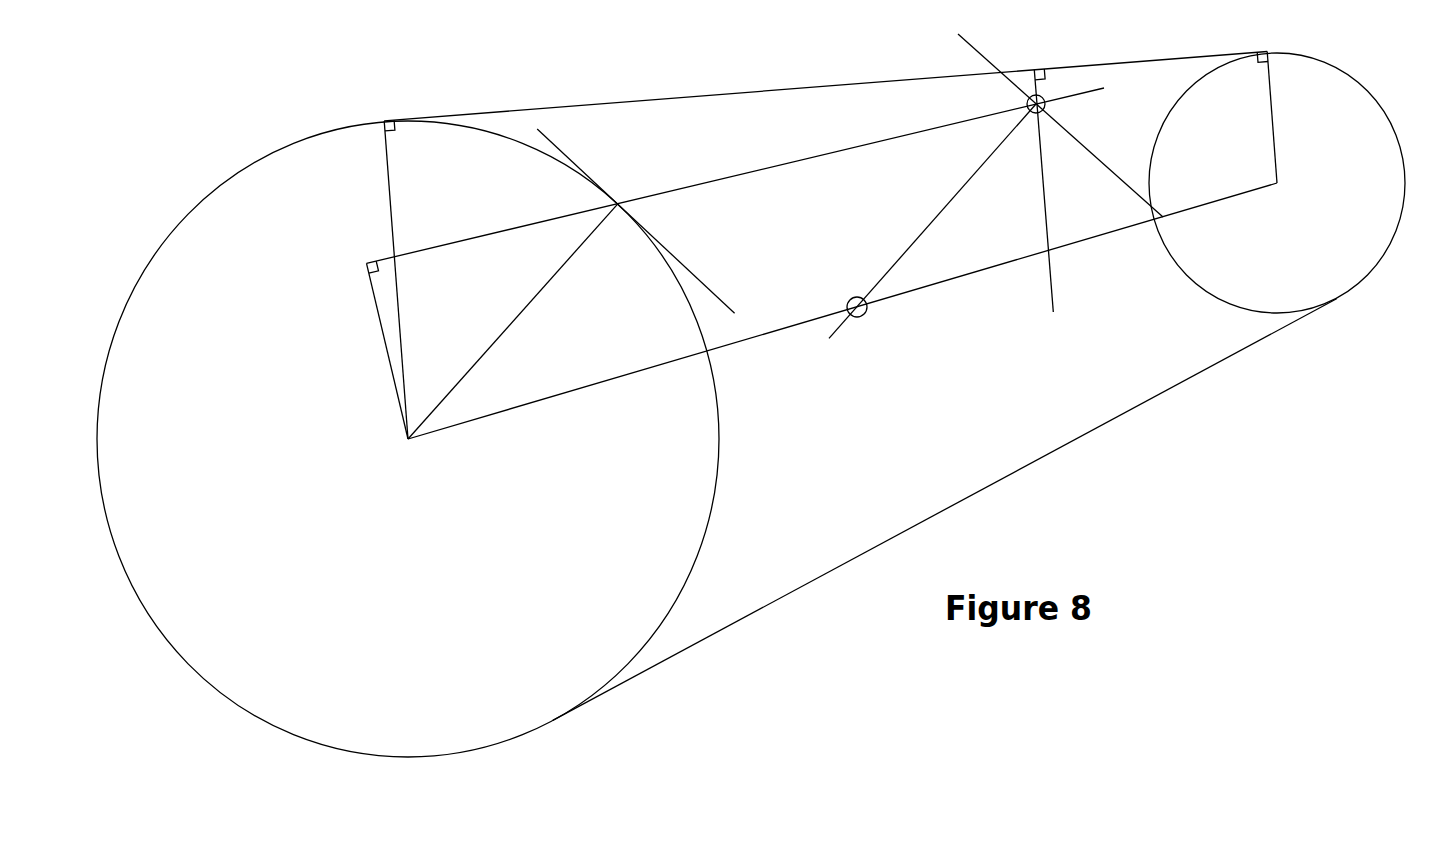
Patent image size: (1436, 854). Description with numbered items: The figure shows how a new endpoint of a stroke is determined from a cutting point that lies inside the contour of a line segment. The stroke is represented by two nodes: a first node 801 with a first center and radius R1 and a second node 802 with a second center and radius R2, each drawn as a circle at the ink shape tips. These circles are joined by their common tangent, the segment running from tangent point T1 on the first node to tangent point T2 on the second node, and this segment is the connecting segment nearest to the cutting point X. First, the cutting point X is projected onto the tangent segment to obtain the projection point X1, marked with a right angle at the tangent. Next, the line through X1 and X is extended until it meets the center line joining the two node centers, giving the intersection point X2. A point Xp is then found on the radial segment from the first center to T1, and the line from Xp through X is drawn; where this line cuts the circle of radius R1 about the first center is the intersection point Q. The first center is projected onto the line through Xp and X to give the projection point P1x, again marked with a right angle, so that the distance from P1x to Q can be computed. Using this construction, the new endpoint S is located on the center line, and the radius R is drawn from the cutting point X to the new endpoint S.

The node P1 801 is at (408, 439).
The node P2 802 is at (1277, 183).
The tangent point T1 is at (819, 246).
The tangent point T2 is at (1261, 39).
The radius R1 is at (513, 321).
The radius R2 is at (1288, 118).
The projection point P1x is at (355, 346).
The point Xp is at (736, 194).
The intersection point Q is at (635, 221).
The cutting point X is at (1060, 125).
The projection point X1 is at (1027, 54).
The intersection point X2 is at (1059, 191).
The radius R is at (932, 221).
The new endpoint S is at (874, 316).